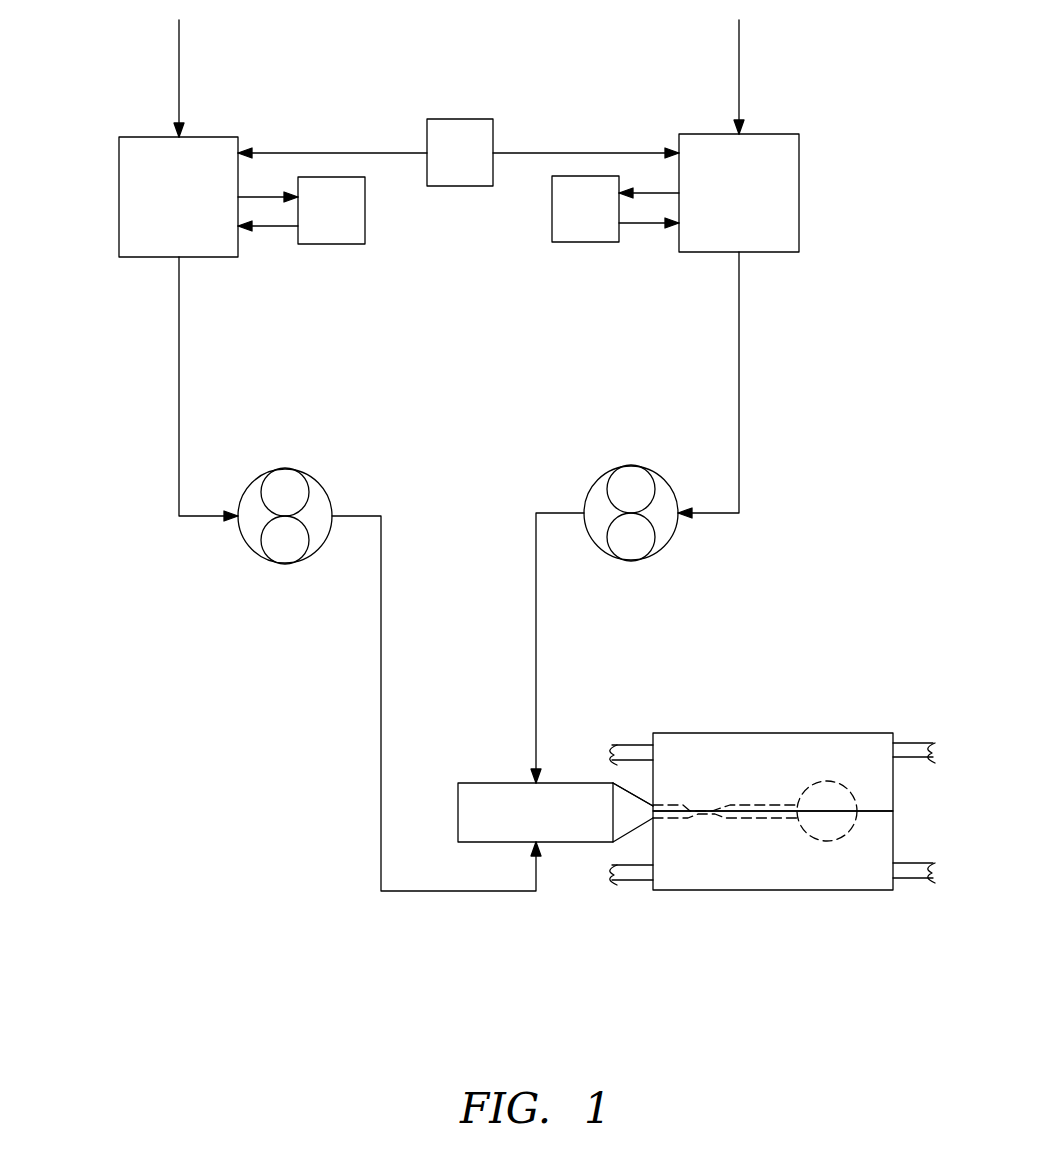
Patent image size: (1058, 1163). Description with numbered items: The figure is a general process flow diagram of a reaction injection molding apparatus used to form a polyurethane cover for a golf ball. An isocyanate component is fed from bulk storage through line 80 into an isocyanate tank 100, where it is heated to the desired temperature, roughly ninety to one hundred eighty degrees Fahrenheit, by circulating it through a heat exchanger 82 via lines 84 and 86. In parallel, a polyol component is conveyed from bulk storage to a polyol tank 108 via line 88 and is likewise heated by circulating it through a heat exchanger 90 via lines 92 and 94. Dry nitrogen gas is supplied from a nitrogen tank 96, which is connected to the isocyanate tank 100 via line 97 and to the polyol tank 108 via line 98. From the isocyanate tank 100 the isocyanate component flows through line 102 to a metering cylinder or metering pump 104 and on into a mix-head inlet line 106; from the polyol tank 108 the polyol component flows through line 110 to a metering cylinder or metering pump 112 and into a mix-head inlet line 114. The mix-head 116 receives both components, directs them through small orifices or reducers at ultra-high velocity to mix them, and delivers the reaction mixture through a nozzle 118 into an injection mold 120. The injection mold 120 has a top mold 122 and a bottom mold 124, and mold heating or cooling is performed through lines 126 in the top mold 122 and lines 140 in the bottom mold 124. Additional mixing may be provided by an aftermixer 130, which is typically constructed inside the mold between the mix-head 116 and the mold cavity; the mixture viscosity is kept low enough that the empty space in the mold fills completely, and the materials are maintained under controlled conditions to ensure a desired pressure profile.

The line 80 is at (179, 62).
The heat exchanger 82 is at (338, 244).
The line 84 is at (260, 193).
The line 86 is at (280, 227).
The line 88 is at (739, 54).
The heat exchanger 90 is at (583, 242).
The line 92 is at (660, 192).
The line 94 is at (643, 223).
The nitrogen tank 96 is at (460, 119).
The line 97 is at (357, 152).
The line 98 is at (548, 152).
The isocyanate tank 100 is at (155, 137).
The line 102 is at (179, 386).
The metering pump 104 is at (255, 552).
The mix-head inlet line 106 is at (381, 676).
The polyol tank 108 is at (767, 134).
The line 110 is at (739, 383).
The metering pump 112 is at (662, 552).
The mix-head inlet line 114 is at (536, 648).
The mix-head 116 is at (497, 783).
The nozzle 118 is at (630, 808).
The injection mold 120 is at (775, 791).
The top mold 122 is at (755, 745).
The bottom mold 124 is at (765, 878).
The lines 126 is at (908, 742).
The aftermixer 130 is at (690, 803).
The lines 140 is at (912, 878).